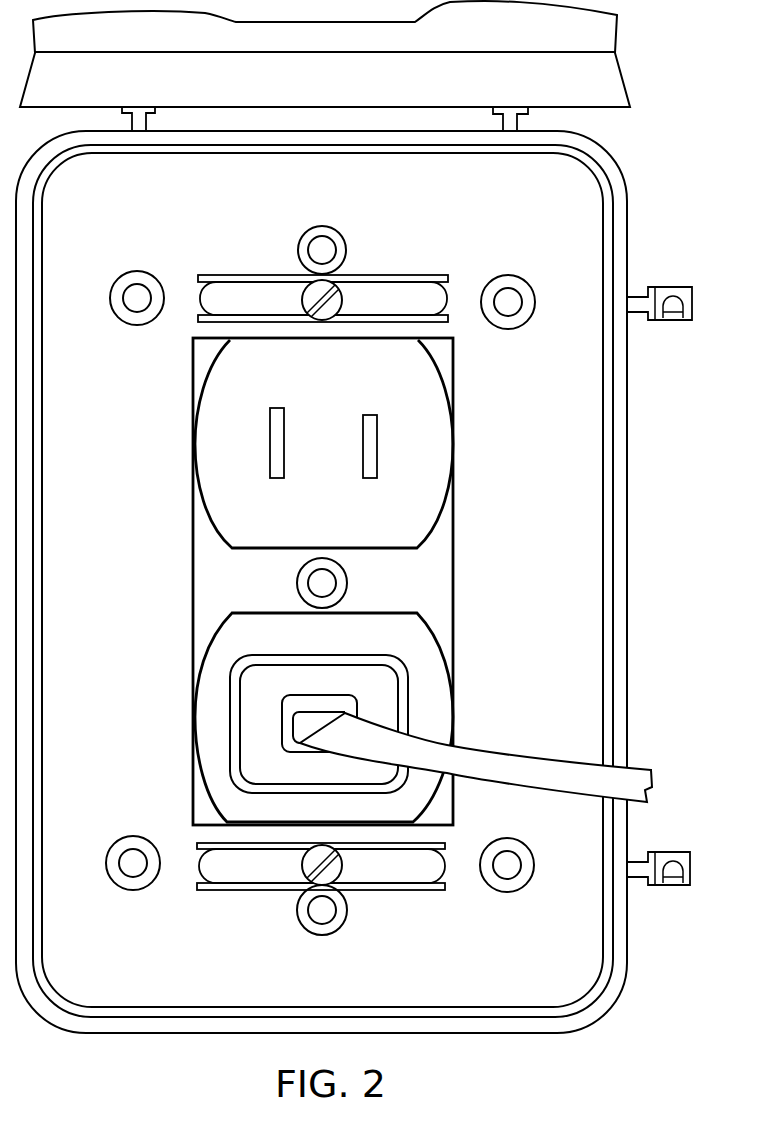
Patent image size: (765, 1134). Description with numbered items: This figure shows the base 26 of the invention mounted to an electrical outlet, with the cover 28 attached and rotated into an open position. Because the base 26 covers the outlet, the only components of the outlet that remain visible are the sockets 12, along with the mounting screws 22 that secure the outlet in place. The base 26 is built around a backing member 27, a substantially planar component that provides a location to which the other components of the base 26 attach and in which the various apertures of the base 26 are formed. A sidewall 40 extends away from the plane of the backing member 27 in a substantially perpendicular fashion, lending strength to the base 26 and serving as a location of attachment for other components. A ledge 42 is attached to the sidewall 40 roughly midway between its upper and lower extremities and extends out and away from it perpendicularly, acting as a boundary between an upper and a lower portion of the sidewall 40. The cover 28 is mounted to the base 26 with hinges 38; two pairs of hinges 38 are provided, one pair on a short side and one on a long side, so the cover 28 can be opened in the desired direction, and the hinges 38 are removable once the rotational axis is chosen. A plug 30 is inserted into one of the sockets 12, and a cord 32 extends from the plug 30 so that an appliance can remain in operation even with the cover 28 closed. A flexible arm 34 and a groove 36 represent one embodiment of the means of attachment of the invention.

The sockets 12 is at (424, 483).
The mounting screws 22 is at (336, 872).
The base 26 is at (562, 558).
The backing member 27 is at (125, 437).
The cover 28 is at (67, 88).
The plug 30 is at (275, 695).
The cord 32 is at (558, 777).
The flexible arm 34 is at (398, 294).
The groove 36 is at (246, 276).
The hinges 38 is at (512, 117).
The sidewall 40 is at (37, 622).
The ledge 42 is at (22, 813).